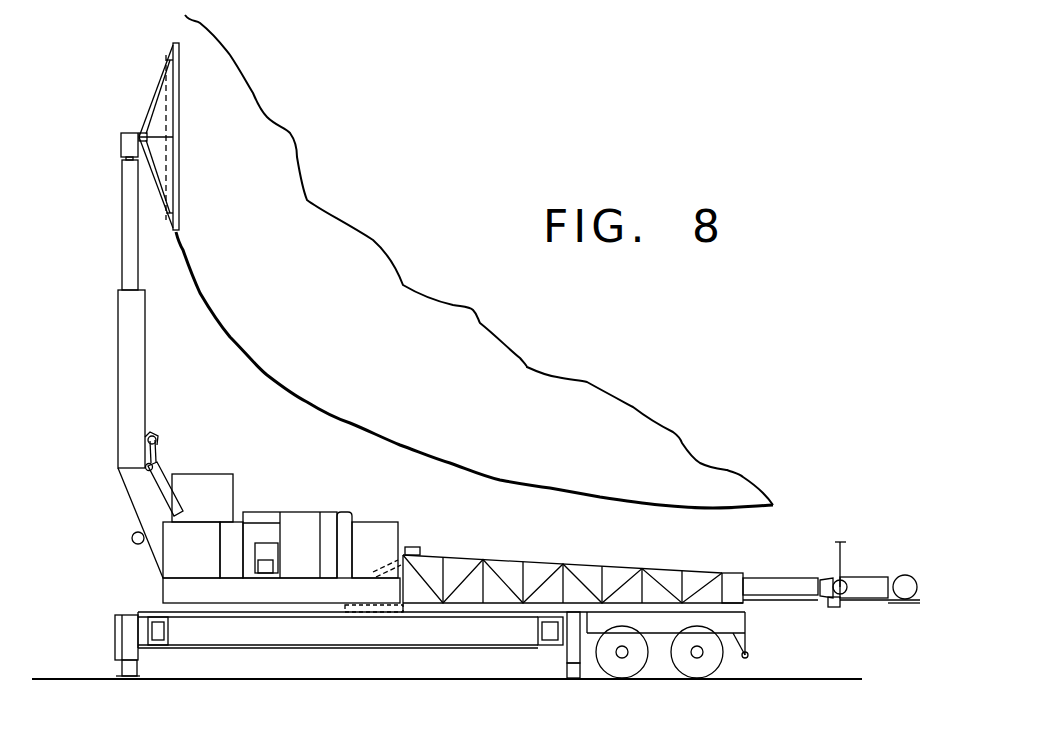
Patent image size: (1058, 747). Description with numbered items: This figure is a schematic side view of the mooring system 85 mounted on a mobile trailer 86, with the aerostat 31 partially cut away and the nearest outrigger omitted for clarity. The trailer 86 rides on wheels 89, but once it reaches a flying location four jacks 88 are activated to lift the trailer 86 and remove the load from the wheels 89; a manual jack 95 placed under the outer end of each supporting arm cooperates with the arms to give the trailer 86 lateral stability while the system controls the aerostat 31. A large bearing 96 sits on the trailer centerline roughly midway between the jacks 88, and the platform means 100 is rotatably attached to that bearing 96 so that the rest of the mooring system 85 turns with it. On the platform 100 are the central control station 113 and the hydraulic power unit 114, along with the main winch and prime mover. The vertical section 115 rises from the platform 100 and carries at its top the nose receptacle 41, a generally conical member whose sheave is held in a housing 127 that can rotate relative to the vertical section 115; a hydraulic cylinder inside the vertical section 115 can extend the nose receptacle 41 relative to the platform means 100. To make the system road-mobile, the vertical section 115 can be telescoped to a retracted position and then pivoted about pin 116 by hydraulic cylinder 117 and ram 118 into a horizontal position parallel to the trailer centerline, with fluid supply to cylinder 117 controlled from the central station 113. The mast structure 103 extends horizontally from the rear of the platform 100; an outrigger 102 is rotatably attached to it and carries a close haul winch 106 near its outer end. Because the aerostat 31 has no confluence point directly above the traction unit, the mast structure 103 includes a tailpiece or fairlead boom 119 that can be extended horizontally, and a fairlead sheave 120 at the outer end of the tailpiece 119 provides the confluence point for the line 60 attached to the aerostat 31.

The aerostat 31 is at (302, 213).
The nose receptacle 41 is at (155, 90).
The housing 127 is at (127, 143).
The vertical section 115 is at (125, 328).
The pin 116 is at (143, 467).
The ram 118 is at (153, 440).
The hydraulic cylinder 117 is at (172, 480).
The central control station 113 is at (222, 480).
The hydraulic power unit 114 is at (368, 537).
The platform means 100 is at (237, 595).
The mast structure 103 is at (588, 562).
The tailpiece or fairlead boom 119 is at (768, 582).
The line 60 is at (842, 550).
The outrigger 102 is at (862, 580).
The close haul winch 106 is at (902, 578).
The fairlead sheave 120 is at (837, 607).
The mooring system 85 is at (386, 620).
The mobile trailer 86 is at (745, 623).
The jacks 88 is at (130, 625).
The manual jack 95 is at (158, 672).
The large bearing 96 is at (422, 610).
The wheels 89 is at (687, 670).